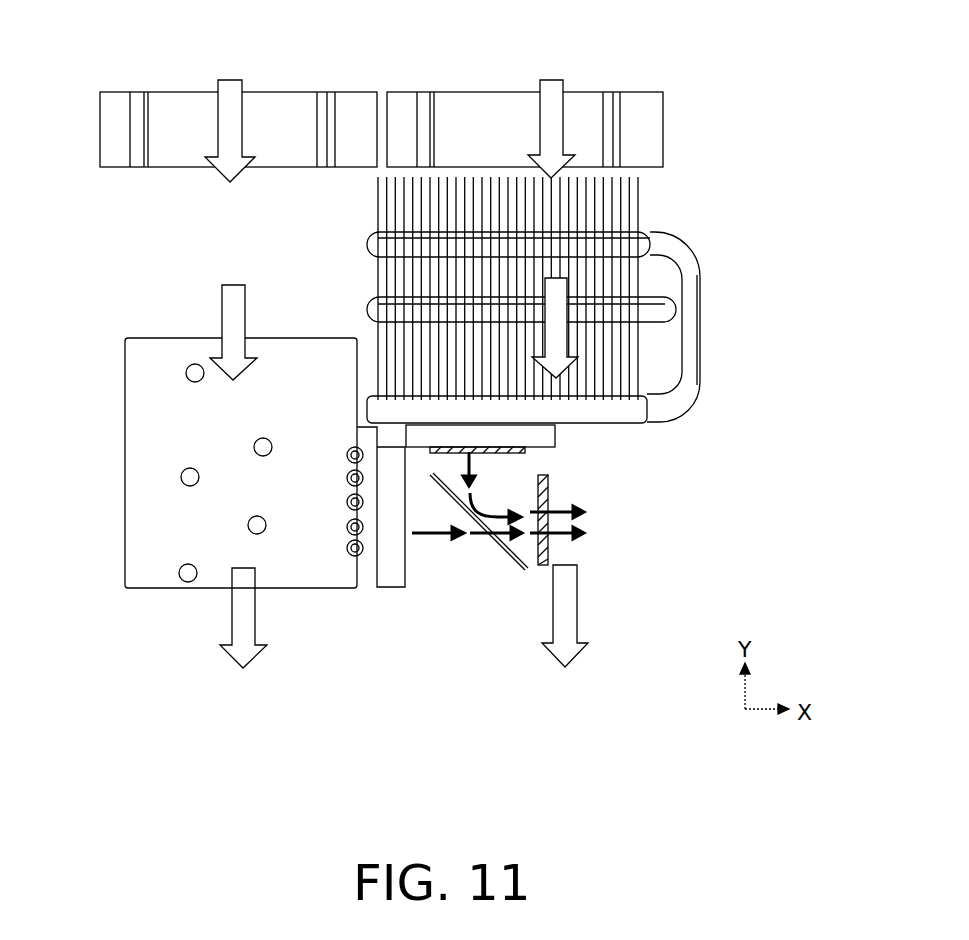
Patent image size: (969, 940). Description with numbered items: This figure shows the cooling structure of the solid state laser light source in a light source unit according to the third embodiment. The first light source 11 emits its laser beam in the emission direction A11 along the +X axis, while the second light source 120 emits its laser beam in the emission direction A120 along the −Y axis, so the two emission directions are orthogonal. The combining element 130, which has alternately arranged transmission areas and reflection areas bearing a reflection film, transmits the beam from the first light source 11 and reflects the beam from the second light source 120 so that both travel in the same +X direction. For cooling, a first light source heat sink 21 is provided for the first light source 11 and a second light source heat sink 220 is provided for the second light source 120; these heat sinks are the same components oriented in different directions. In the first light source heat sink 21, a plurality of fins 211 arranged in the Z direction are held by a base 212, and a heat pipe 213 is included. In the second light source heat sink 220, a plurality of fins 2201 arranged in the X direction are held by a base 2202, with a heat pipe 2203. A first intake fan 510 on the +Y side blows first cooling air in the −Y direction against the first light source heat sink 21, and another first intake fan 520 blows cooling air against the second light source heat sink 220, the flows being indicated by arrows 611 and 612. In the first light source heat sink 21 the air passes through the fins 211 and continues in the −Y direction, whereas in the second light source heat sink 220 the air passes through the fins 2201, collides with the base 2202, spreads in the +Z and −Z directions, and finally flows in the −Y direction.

The first intake fan 510 is at (203, 105).
The first intake fan 520 is at (571, 113).
The flowing direction of first cooling air 611 is at (220, 358).
The flowing direction of first cooling air 612 is at (593, 354).
The second light source heat sink 220 is at (617, 333).
The fins 2201 is at (573, 307).
The heat pipe 2203 is at (579, 327).
The base 2202 is at (574, 437).
The second light source 120 is at (585, 479).
The emission direction A120 is at (603, 509).
The combining element 130 is at (496, 585).
The first light source 11 is at (419, 564).
The emission direction A11 is at (472, 631).
The first light source heat sink 21 is at (279, 518).
The fins 211 is at (251, 493).
The base 212 is at (390, 574).
The heat pipe 213 is at (250, 533).